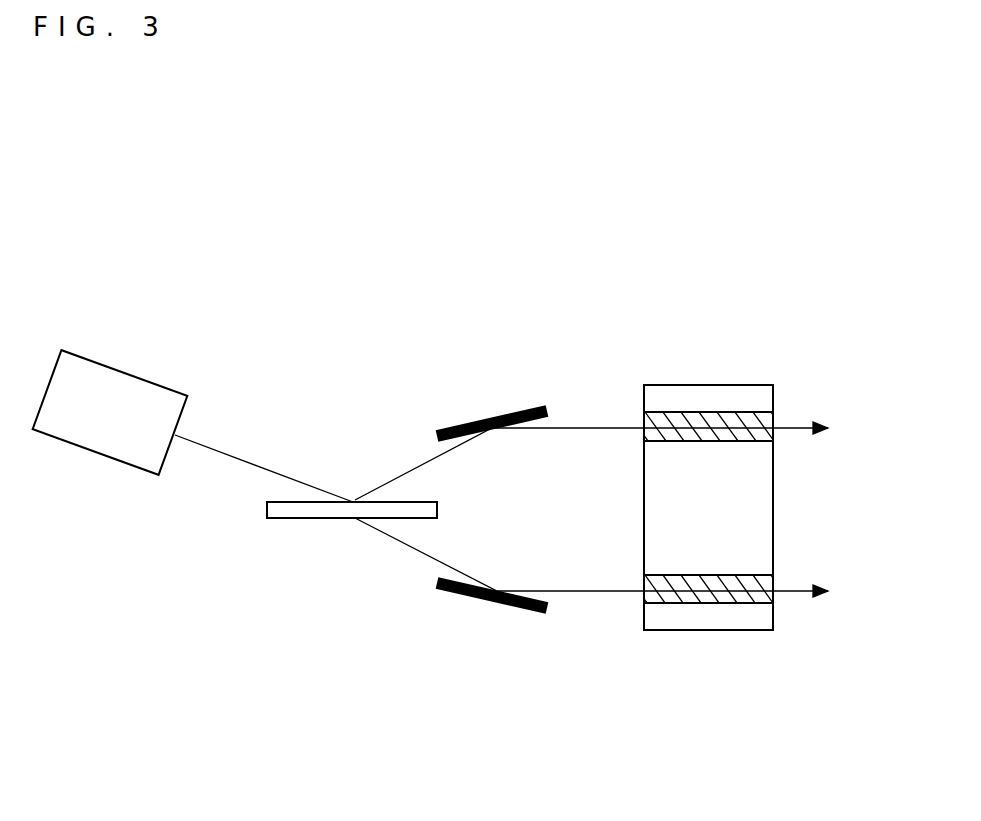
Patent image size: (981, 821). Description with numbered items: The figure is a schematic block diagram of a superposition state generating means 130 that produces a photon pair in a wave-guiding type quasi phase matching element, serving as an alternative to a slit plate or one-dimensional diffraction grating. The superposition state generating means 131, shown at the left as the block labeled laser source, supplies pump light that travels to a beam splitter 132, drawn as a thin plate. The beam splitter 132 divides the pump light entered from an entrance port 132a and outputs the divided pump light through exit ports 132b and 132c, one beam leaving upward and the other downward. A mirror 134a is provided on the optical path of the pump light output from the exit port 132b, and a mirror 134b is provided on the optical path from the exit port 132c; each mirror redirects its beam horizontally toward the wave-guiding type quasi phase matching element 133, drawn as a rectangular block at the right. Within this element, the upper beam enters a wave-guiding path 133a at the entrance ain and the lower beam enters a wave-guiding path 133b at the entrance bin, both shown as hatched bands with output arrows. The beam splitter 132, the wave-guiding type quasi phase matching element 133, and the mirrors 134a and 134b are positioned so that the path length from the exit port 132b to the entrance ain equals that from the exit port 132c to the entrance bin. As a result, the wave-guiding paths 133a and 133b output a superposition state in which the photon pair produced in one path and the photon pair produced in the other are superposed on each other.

The superposition state generating means 130 is at (158, 216).
The superposition state generating means 131 is at (128, 370).
The beam splitter 132 is at (287, 520).
The entrance port 132a is at (323, 488).
The exit port 132b is at (353, 498).
The exit port 132c is at (355, 520).
The wave-guiding type quasi phase matching element 133 is at (658, 632).
The wave-guiding path 133a is at (708, 412).
The wave-guiding path 133b is at (708, 605).
The mirror 134a is at (530, 407).
The mirror 134b is at (530, 612).